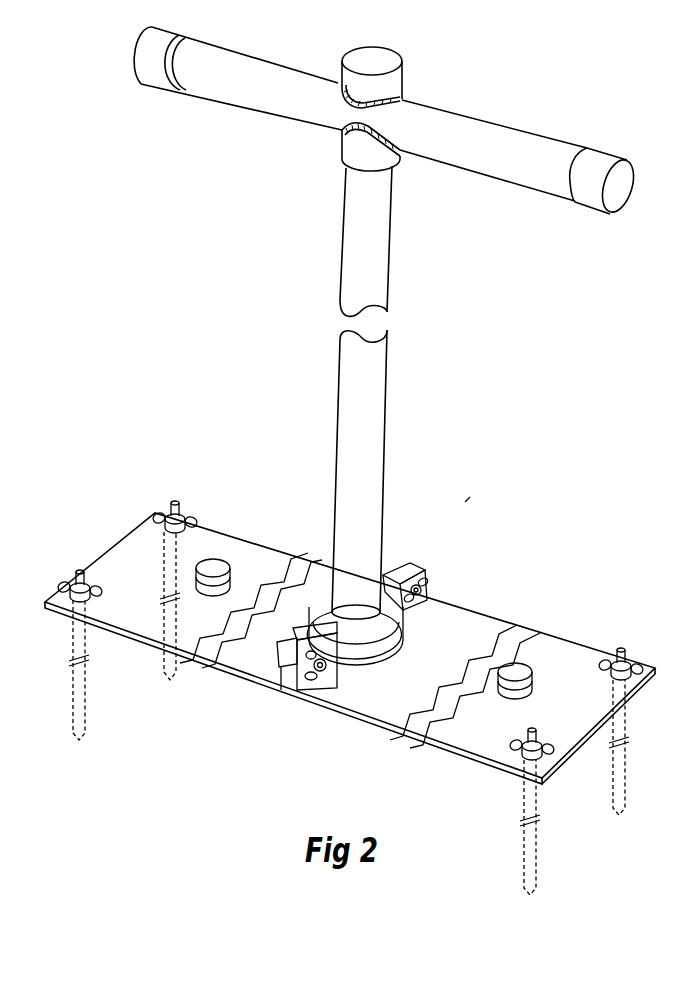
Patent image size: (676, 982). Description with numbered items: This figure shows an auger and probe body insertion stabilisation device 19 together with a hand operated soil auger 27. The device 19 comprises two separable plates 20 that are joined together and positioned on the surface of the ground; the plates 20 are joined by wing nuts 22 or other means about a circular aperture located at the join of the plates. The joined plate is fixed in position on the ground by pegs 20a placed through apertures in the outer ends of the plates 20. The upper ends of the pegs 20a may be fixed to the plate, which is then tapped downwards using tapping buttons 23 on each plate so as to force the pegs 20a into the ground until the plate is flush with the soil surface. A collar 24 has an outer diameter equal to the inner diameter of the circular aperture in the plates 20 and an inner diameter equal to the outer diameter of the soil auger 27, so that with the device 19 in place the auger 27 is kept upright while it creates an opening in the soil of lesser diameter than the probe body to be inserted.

The auger and probe body insertion stabilisation device 19 is at (465, 502).
The separable plates 20 is at (133, 560).
The pegs 20a is at (87, 695).
The wing nuts 22 is at (427, 580).
The tapping buttons 23 is at (213, 568).
The collar 24 is at (313, 587).
The soil auger 27 is at (378, 275).